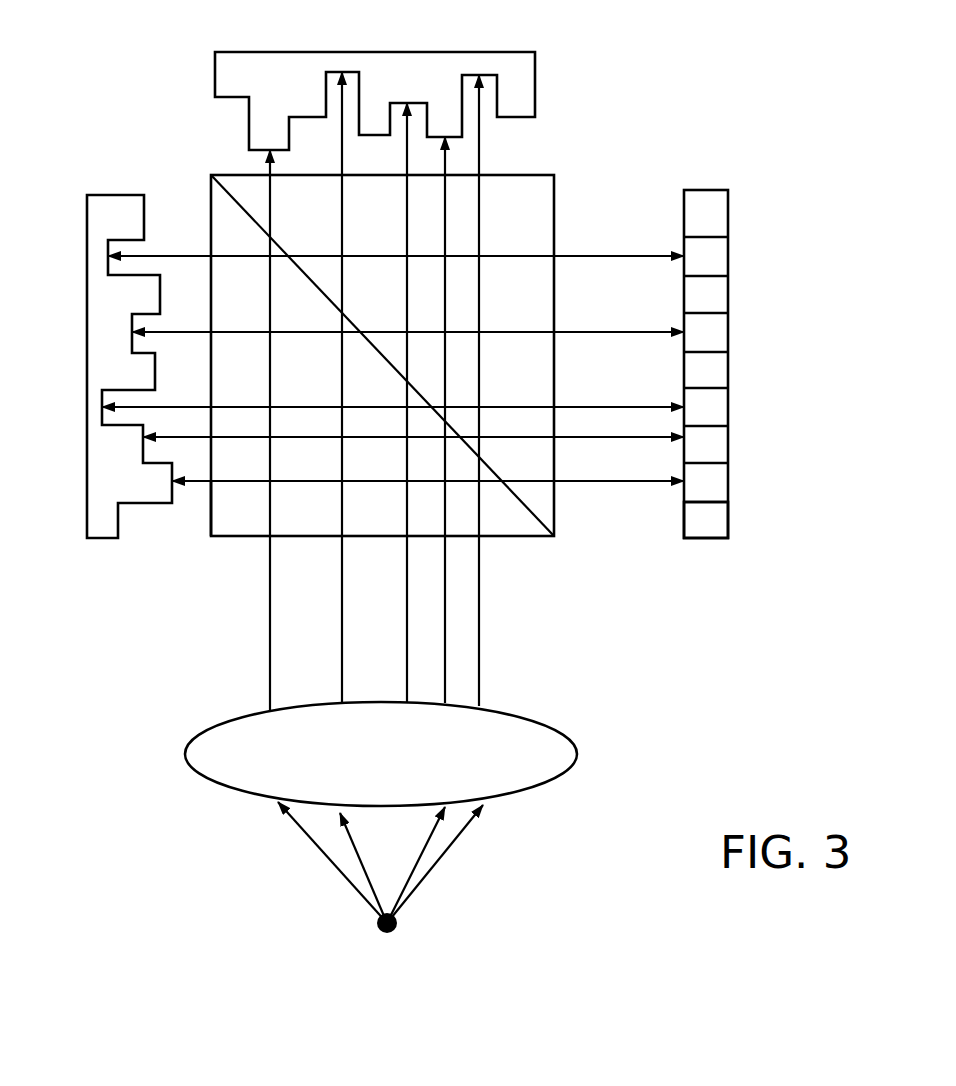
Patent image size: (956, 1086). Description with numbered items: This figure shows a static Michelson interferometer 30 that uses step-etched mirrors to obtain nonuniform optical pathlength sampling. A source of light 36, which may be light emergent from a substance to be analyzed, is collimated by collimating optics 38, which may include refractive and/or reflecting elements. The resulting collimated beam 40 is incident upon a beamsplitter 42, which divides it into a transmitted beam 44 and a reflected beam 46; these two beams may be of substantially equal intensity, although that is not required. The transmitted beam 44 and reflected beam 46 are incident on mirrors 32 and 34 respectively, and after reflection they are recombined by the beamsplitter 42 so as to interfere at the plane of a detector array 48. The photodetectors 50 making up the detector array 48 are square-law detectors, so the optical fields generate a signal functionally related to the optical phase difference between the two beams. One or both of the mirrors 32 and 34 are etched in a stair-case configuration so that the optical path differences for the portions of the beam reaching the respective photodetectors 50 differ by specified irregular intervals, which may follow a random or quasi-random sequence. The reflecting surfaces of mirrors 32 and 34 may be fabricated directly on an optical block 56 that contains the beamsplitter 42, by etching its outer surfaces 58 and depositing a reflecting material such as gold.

The static Michelson interferometer 30 is at (662, 86).
The mirror 32 is at (401, 54).
The mirror 34 is at (87, 247).
The source of light 36 is at (400, 927).
The collimating optics 38 is at (578, 752).
The collimated beam 40 is at (468, 655).
The beamsplitter 42 is at (555, 535).
The transmitted beam 44 is at (480, 240).
The reflected beam 46 is at (260, 482).
The detector array 48 is at (760, 187).
The photodetectors 50 is at (712, 525).
The optical block 56 is at (244, 563).
The outer surfaces 58 is at (170, 378).